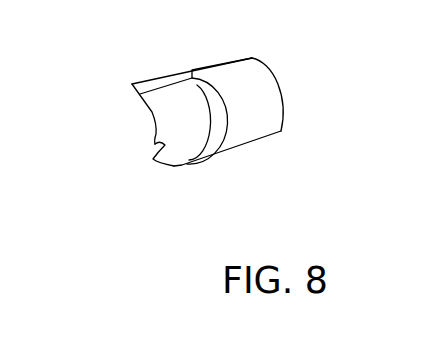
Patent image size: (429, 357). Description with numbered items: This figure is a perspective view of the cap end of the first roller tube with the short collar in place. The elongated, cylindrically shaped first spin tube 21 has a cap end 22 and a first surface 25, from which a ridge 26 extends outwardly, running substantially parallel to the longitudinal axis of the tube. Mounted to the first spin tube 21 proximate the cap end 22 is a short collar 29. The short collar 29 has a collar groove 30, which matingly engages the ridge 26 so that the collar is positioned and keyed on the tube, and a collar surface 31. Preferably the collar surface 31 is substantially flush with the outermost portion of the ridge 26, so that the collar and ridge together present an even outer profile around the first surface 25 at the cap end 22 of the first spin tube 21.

The first spin tube 21 is at (168, 165).
The cap end 22 is at (291, 57).
The first surface 25 is at (155, 150).
The ridge 26 is at (143, 98).
The short collar 29 is at (283, 130).
The collar groove 30 is at (253, 58).
The collar surface 31 is at (250, 128).